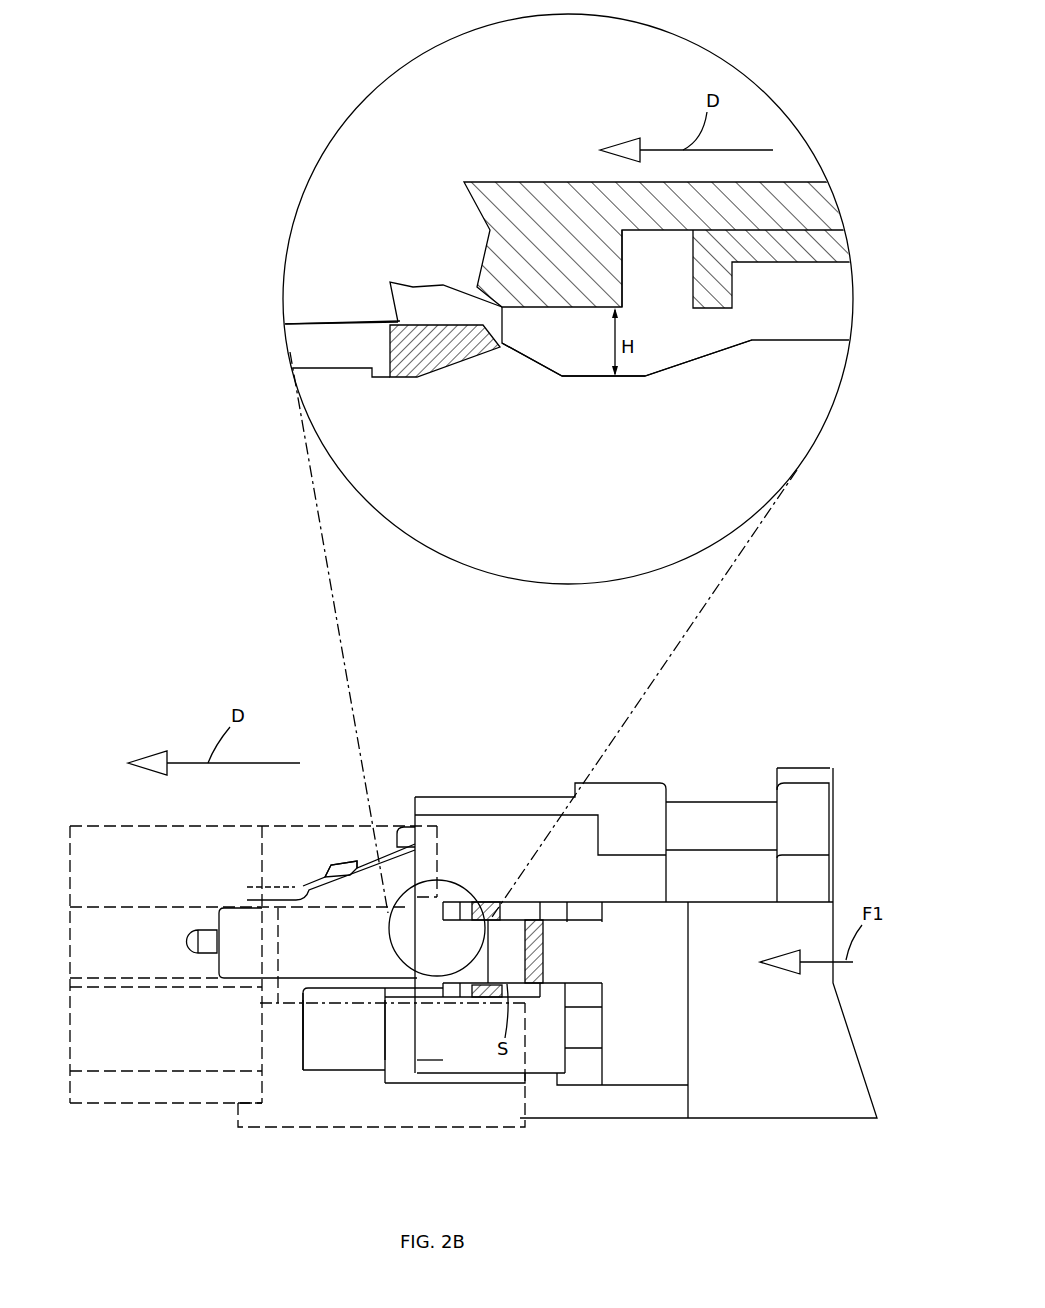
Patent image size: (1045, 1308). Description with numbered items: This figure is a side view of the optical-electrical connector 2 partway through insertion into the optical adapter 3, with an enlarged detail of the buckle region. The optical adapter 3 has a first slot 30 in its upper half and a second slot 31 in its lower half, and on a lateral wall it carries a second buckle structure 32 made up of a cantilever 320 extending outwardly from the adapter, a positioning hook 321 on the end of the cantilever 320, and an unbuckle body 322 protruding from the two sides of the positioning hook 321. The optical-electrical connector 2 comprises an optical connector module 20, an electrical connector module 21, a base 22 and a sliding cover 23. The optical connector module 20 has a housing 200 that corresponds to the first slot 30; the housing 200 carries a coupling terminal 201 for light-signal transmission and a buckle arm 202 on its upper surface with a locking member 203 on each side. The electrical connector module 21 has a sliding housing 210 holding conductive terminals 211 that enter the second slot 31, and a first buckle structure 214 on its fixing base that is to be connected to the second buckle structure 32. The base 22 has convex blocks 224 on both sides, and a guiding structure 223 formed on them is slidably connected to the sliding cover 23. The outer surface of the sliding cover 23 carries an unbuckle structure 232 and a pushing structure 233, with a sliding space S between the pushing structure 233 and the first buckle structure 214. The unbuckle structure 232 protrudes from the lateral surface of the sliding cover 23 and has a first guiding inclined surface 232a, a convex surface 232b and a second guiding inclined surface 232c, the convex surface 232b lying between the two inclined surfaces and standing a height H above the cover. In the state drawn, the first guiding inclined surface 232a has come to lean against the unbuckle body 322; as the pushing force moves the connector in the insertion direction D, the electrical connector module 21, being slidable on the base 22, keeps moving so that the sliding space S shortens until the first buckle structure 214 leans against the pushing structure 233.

The optical-electrical connector 2 is at (831, 770).
The optical adapter 3 is at (78, 824).
The optical connector module 20 is at (245, 896).
The electrical connector module 21 is at (347, 1074).
The base 22 is at (393, 1082).
The sliding cover 23 is at (562, 185).
The first slot 30 is at (107, 953).
The second slot 31 is at (107, 1039).
The second buckle structure 32 is at (288, 349).
The housing 200 is at (232, 965).
The coupling terminal 201 is at (205, 950).
The buckle arm 202 is at (385, 847).
The locking member 203 is at (338, 863).
The sliding housing 210 is at (304, 1045).
The conductive terminal 211 is at (301, 1022).
The first buckle structure 214 is at (708, 297).
The guiding structure 223 is at (405, 1064).
The convex block 224 is at (392, 1025).
The unbuckle structure 232 is at (680, 321).
The first guiding inclined surface 232a is at (537, 360).
The convex surface 232b is at (615, 378).
The second guiding inclined surface 232c is at (672, 372).
The pushing structure 233 is at (622, 278).
The cantilever 320 is at (349, 326).
The positioning hook 321 is at (415, 285).
The unbuckle body 322 is at (423, 353).